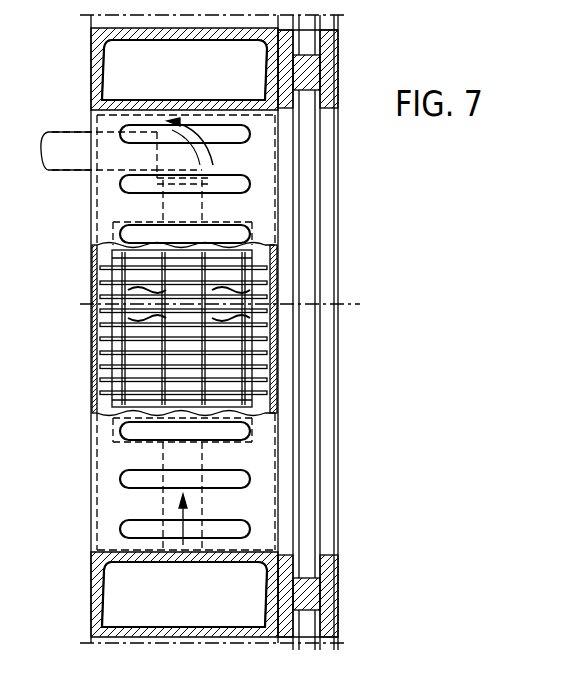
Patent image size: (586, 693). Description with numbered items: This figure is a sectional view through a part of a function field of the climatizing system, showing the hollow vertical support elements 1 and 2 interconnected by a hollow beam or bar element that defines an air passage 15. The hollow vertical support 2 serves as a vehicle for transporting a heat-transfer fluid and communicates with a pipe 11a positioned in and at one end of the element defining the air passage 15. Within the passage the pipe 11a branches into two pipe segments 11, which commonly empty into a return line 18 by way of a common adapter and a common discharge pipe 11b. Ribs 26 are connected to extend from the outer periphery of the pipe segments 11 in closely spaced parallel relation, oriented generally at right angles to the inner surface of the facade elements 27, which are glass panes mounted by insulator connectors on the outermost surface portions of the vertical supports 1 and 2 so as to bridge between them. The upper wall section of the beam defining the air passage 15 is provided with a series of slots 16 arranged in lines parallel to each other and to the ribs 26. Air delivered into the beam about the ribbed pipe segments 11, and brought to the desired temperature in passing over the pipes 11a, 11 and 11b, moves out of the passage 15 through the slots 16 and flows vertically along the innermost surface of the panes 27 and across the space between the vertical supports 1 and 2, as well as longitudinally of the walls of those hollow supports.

The hollow vertical support element 1 is at (91, 70).
The hollow vertical support element 2 is at (90, 592).
The pipe segments 11 is at (100, 278).
The pipe 11a is at (203, 455).
The common discharge pipe 11b is at (203, 206).
The air passage 15 is at (90, 443).
The slots 16 is at (130, 528).
The return line 18 is at (65, 160).
The ribs 26 is at (100, 356).
The facade elements 27 is at (300, 232).